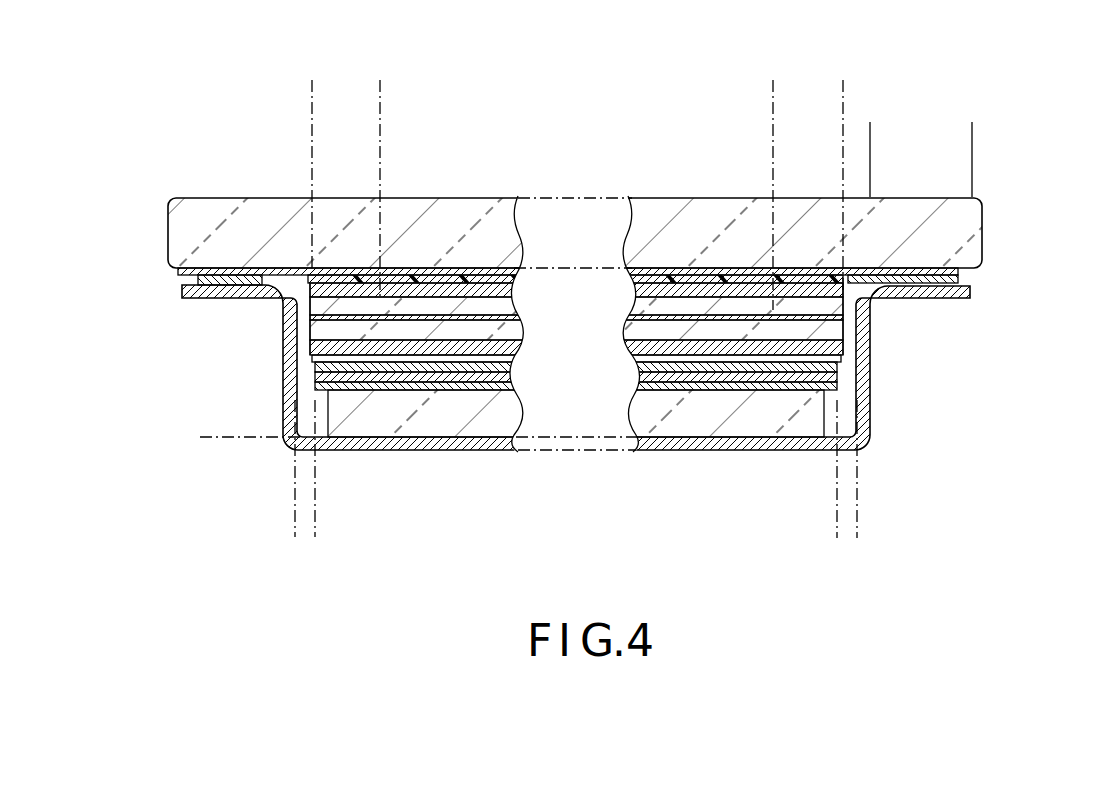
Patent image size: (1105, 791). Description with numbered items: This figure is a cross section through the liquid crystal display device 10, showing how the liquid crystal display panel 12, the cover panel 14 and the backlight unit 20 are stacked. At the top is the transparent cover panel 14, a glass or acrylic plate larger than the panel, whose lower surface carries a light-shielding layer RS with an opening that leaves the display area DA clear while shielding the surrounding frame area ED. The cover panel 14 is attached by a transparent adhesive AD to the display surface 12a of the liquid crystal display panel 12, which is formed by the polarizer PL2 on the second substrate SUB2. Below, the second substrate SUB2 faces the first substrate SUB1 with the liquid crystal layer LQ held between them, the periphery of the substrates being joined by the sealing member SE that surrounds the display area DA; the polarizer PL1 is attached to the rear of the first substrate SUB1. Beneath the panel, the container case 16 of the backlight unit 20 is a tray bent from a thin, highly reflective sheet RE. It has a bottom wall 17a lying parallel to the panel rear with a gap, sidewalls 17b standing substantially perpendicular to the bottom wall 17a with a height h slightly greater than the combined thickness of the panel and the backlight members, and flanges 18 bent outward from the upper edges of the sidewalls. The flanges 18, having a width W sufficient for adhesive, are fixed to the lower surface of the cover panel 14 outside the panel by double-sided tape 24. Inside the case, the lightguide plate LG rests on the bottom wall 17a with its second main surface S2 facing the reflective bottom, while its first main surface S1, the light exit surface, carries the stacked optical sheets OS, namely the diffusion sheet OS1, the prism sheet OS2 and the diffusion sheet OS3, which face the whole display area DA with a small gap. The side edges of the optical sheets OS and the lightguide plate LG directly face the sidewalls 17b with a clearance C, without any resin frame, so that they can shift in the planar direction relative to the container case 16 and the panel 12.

The liquid crystal display device 10 is at (858, 120).
The liquid crystal display panel 12 is at (688, 332).
The display surface 12a is at (481, 280).
The cover panel 14 is at (257, 207).
The container case 16 is at (373, 456).
The bottom wall 17a is at (483, 450).
The sidewall 17b is at (283, 375).
The flange 18 is at (935, 300).
The backlight unit 20 is at (436, 424).
The double-sided tape 24 is at (198, 282).
The light-shielding layer RS is at (212, 272).
The sealing member SE is at (342, 310).
The transparent adhesive AD is at (398, 279).
The polarizer PL2 is at (445, 290).
The polarizer PL1 is at (708, 358).
The liquid crystal layer LQ is at (688, 318).
The first substrate SUB1 is at (837, 330).
The second substrate SUB2 is at (840, 303).
The optical sheets OS is at (688, 423).
The diffusion sheet OS1 is at (833, 387).
The prism sheet OS2 is at (833, 377).
The diffusion sheet OS3 is at (833, 367).
The lightguide plate LG is at (640, 423).
The reflective sheet RE is at (708, 347).
The first main surface S1 is at (770, 397).
The second main surface S2 is at (772, 393).
The frame area ED is at (843, 93).
The display area DA is at (380, 93).
The width W is at (972, 135).
The gap C is at (897, 520).
The height h is at (217, 298).